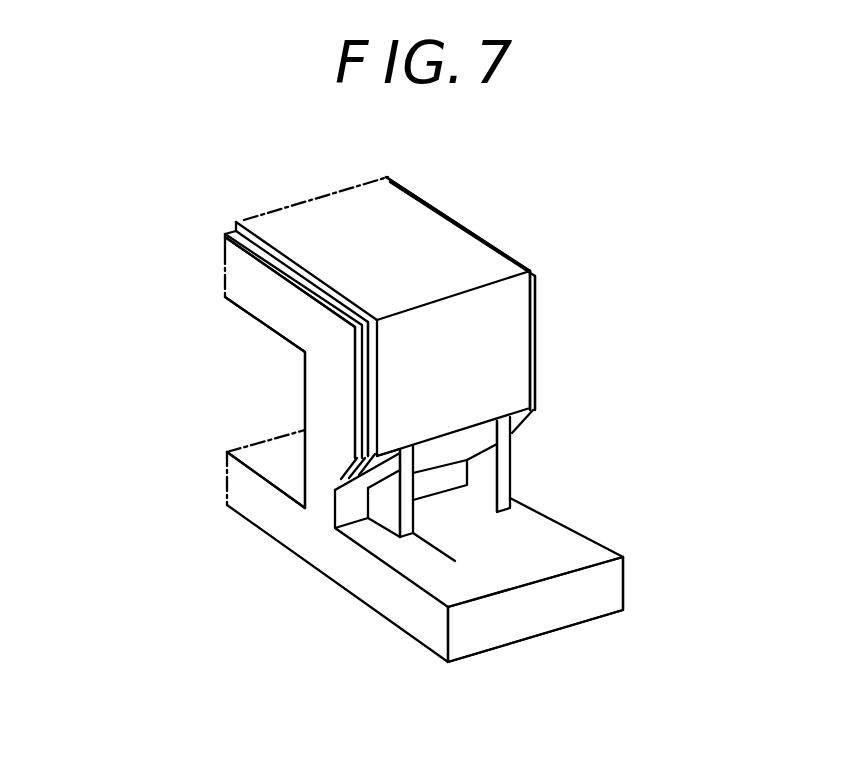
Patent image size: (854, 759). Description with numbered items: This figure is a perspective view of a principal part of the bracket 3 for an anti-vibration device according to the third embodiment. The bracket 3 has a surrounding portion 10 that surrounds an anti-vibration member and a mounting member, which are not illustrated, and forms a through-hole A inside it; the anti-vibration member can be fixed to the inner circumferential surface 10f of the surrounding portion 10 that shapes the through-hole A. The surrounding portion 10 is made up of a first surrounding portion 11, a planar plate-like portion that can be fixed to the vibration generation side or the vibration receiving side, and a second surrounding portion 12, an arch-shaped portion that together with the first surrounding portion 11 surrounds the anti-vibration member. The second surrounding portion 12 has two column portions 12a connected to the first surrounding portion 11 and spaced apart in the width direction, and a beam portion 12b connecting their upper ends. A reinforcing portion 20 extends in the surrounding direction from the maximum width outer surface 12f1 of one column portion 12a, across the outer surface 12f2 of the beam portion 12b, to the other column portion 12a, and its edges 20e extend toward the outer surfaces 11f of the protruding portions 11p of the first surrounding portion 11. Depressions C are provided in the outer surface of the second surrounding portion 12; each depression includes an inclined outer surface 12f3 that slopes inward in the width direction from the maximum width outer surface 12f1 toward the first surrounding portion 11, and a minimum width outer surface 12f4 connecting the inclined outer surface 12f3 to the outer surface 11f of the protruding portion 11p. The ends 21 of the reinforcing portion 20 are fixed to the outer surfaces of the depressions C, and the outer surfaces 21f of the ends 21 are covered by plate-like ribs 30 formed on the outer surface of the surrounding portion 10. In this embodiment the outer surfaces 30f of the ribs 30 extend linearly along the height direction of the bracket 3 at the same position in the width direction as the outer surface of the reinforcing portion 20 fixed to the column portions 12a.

The bracket for an anti-vibration device 3 is at (303, 176).
The surrounding portion 10 is at (222, 461).
The inner circumferential surface 10f is at (268, 332).
The first surrounding portion 11 is at (300, 562).
The outer surface of protruding portion 11f is at (598, 549).
The protruding portion 11p is at (507, 618).
The second surrounding portion 12 is at (449, 206).
The column portion 12a is at (328, 443).
The beam portion 12b is at (257, 290).
The maximum width outer surface of column portion 12f1 is at (538, 303).
The outer surface of beam portion 12f2 is at (496, 236).
The inclined outer surface of column portion 12f3 is at (386, 454).
The minimum width outer surface of column portion 12f4 is at (448, 483).
The reinforcing portion 20 is at (397, 221).
The edge of reinforcing portion 20e is at (358, 512).
The end of reinforcing portion 21 is at (473, 431).
The outer surface of end of reinforcing portion 21f is at (450, 447).
The rib 30 is at (409, 516).
The outer surface of rib 30f is at (409, 490).
The through-hole A is at (233, 362).
The depression C is at (512, 465).